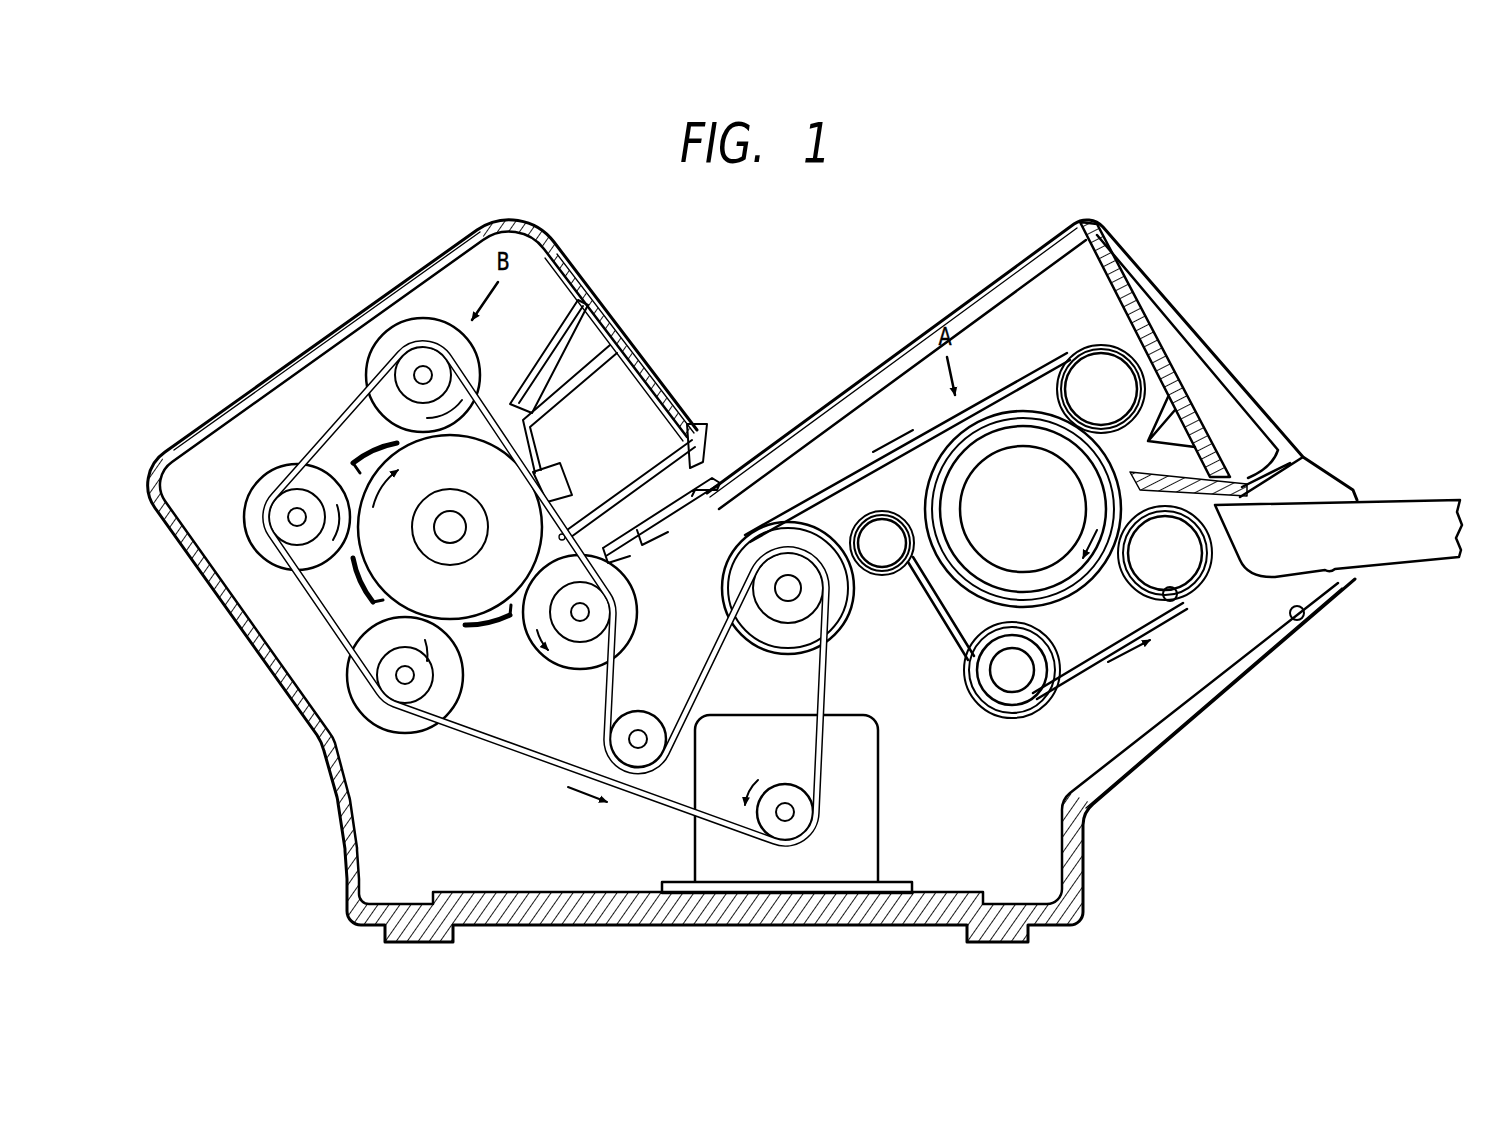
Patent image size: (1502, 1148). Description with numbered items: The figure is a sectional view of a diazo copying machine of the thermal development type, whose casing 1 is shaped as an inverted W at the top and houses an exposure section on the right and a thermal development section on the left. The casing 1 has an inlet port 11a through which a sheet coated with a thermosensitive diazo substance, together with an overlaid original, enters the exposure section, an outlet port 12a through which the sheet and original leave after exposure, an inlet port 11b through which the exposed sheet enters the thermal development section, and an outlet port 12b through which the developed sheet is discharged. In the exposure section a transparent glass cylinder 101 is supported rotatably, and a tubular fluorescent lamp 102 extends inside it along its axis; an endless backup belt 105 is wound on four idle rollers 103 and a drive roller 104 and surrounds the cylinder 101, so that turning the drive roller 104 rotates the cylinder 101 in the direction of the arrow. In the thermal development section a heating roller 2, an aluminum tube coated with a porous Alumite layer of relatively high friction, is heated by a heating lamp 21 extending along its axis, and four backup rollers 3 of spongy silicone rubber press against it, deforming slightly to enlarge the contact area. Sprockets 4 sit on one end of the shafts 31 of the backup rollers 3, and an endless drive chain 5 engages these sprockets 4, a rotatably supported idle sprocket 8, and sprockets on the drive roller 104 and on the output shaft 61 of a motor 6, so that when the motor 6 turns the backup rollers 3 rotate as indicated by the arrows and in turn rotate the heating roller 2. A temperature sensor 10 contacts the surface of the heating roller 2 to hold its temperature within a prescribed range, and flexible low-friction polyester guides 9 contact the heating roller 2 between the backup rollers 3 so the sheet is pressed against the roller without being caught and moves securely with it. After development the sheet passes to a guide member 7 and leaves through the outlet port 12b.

The casing 1 is at (903, 336).
The heating roller 2 is at (477, 437).
The heating lamp 21 is at (448, 514).
The backup rollers 3 is at (372, 357).
The shafts 31 is at (420, 371).
The sprockets 4 is at (433, 352).
The endless drive chain 5 is at (518, 755).
The motor 6 is at (872, 813).
The output shaft 61 is at (784, 800).
The guide member 7 is at (531, 370).
The idle sprocket 8 is at (649, 717).
The guides 9 is at (372, 453).
The temperature sensor 10 is at (563, 469).
The inlet port 11a is at (1323, 474).
The inlet port 11b is at (712, 452).
The outlet port 12a is at (1257, 452).
The outlet port 12b is at (590, 296).
The transparent glass cylinder 101 is at (1016, 417).
The tubular fluorescent lamp 102 is at (1060, 565).
The idle rollers 103 is at (1065, 383).
The drive roller 104 is at (762, 548).
The endless backup belt 105 is at (846, 477).